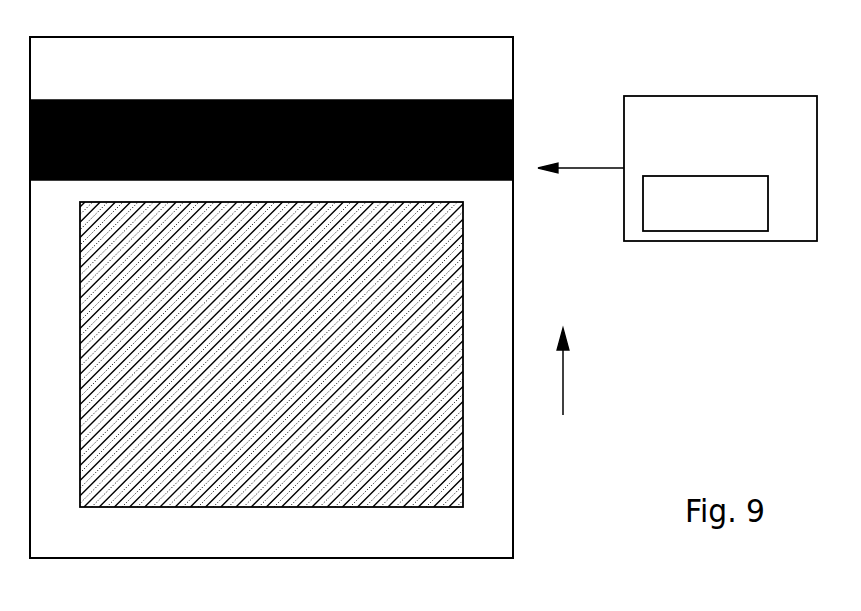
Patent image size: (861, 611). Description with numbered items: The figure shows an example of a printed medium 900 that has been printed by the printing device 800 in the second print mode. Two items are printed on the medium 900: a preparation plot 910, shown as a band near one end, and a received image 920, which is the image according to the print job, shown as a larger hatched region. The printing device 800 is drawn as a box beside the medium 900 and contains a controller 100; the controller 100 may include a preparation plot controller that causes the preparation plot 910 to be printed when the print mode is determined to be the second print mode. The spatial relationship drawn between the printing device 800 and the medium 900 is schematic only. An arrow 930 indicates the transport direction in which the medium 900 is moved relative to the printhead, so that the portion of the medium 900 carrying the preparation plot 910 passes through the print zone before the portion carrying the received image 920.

The printed medium 900 is at (57, 37).
The preparation plot 910 is at (113, 100).
The received image 920 is at (392, 508).
The printing device 800 is at (696, 95).
The controller 100 is at (715, 176).
The arrow 930 is at (567, 350).